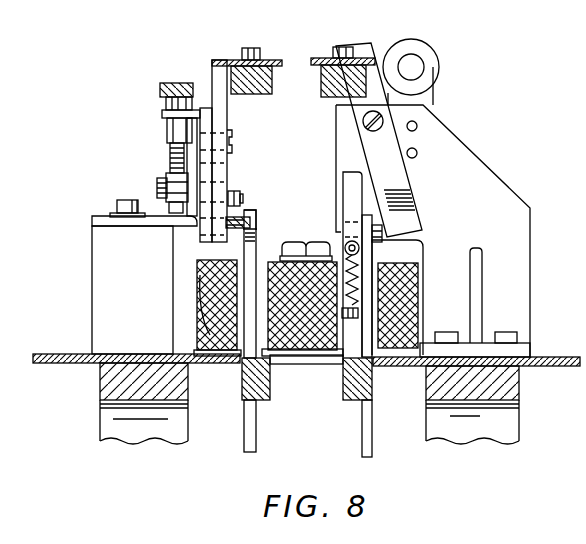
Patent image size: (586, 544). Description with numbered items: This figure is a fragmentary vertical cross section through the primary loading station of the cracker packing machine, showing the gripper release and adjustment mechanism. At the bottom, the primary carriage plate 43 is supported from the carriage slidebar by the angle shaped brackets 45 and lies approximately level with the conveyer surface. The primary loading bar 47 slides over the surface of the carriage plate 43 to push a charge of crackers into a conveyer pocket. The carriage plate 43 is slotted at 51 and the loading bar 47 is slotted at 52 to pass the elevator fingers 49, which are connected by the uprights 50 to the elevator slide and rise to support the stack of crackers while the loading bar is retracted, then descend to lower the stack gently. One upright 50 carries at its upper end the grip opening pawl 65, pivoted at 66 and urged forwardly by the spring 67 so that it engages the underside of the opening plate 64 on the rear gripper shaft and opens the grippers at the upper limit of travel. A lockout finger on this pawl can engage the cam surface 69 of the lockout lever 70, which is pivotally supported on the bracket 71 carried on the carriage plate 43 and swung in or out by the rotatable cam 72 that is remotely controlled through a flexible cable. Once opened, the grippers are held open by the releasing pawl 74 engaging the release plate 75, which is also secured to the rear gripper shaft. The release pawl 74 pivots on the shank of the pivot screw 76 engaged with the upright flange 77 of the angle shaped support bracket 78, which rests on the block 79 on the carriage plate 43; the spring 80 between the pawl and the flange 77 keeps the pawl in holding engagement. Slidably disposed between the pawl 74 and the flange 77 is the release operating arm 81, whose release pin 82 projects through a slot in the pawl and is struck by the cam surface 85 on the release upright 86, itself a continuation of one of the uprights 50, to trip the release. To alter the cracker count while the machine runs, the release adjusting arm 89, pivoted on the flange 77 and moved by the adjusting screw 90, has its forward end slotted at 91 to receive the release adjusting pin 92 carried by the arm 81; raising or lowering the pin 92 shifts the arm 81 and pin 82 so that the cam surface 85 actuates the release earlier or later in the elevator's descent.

The primary carriage plate 43 is at (57, 365).
The angle shaped brackets 45 is at (122, 432).
The primary loading bar 47 is at (210, 322).
The elevator fingers 49 is at (246, 367).
The uprights 50 is at (247, 433).
The slot 51 is at (323, 362).
The slot 52 is at (213, 290).
The opening plate 64 is at (322, 58).
The grip opening pawl 65 is at (350, 191).
The pivot 66 is at (378, 244).
The spring 67 is at (356, 290).
The cam surface 69 is at (406, 211).
The lockout lever 70 is at (386, 140).
The bracket 71 is at (488, 180).
The rotatable cam 72 is at (416, 82).
The releasing pawl 74 is at (220, 113).
The release plate 75 is at (218, 61).
The pivot screw 76 is at (233, 137).
The upright flange 77 is at (192, 131).
The support bracket 78 is at (93, 218).
The block 79 is at (100, 264).
The spring 80 is at (240, 197).
The release operating arm 81 is at (207, 162).
The release pin 82 is at (256, 219).
The cam surface 85 is at (258, 236).
The release upright 86 is at (250, 264).
The release adjusting arm 89 is at (173, 175).
The adjusting screw 90 is at (160, 88).
The slot 91 is at (167, 183).
The release adjusting pin 92 is at (158, 190).